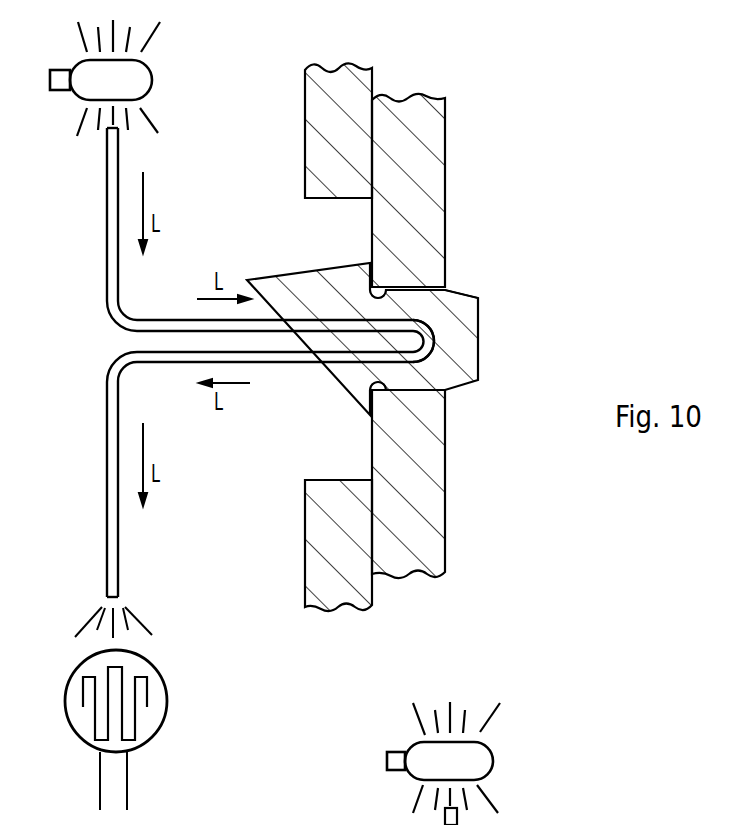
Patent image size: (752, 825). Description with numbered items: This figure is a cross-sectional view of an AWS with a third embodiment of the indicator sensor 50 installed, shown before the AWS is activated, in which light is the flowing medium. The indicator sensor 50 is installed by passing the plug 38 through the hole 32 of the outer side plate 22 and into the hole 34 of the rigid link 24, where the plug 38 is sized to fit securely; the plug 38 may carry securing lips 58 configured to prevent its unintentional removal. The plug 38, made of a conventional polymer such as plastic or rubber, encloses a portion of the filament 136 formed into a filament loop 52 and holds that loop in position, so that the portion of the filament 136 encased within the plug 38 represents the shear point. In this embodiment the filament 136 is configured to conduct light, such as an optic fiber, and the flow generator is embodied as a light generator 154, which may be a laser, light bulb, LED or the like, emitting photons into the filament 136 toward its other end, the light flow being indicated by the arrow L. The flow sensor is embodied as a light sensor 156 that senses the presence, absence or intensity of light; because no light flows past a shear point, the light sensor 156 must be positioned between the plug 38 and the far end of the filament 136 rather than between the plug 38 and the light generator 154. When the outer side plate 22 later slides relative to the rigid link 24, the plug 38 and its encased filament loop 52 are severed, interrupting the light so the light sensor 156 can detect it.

The outer side plate 22 is at (345, 587).
The rigid link 24 is at (445, 517).
The hole 32 is at (337, 450).
The hole 34 is at (413, 393).
The plug 38 is at (480, 316).
The indicator sensor 50 is at (270, 207).
The filament loop 52 is at (437, 346).
The securing lips 58 is at (367, 283).
The filament 136 is at (107, 296).
The light generator 154 is at (129, 91).
The light sensor 156 is at (147, 721).